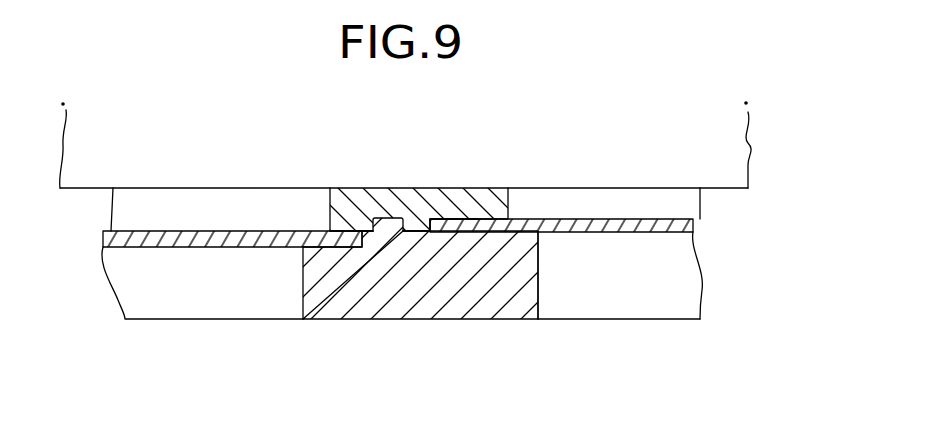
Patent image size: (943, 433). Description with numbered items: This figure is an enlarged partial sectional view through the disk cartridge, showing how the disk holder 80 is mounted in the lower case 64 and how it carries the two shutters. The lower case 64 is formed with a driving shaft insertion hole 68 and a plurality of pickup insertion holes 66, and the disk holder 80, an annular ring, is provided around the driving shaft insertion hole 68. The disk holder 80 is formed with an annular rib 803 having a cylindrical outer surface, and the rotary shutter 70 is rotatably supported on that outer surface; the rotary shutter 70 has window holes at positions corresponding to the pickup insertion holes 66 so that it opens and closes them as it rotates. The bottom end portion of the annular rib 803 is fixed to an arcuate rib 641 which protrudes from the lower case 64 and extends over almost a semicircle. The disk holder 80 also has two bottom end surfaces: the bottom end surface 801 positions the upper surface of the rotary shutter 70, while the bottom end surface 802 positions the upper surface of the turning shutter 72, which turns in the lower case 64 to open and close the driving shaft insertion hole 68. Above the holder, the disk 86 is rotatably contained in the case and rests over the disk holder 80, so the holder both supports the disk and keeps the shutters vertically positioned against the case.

The disk 86 is at (748, 145).
The turning shutter 72 is at (113, 226).
The rotary shutter 70 is at (690, 210).
The disk holder 80 is at (507, 210).
The bottom end surface 802 is at (318, 233).
The bottom end surface 801 is at (460, 222).
The arcuate rib 641 is at (390, 219).
The annular rib 803 is at (416, 232).
The lower case 64 is at (497, 312).
The driving shaft insertion hole 68 is at (297, 307).
The pickup insertion hole 66 is at (539, 298).